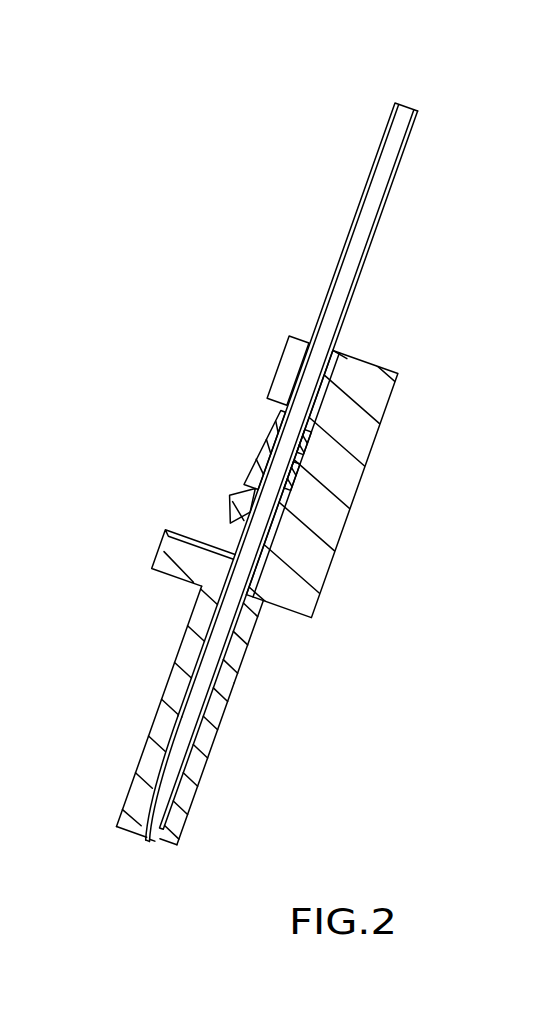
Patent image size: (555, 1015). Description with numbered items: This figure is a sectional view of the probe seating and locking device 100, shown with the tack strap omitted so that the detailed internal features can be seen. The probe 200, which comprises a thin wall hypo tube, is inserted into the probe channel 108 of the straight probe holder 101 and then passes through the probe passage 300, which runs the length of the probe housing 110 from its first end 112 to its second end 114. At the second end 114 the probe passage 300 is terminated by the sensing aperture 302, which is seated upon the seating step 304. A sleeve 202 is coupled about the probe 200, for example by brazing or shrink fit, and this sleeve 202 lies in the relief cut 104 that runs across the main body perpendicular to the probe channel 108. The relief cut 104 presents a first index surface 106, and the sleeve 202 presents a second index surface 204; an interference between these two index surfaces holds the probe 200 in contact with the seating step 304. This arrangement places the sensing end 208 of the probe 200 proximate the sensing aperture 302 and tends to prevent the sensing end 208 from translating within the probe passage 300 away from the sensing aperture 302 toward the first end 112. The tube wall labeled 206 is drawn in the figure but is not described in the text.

The probe seating and locking device 100 is at (155, 123).
The straight probe holder 101 is at (355, 352).
The relief cut 104 is at (300, 490).
The first index surface 106 is at (313, 420).
The probe channel 108 is at (247, 521).
The probe housing 110 is at (212, 728).
The first end 112 is at (250, 608).
The second end 114 is at (173, 833).
The probe 200 is at (345, 273).
The sleeve 202 is at (263, 462).
The second index surface 204 is at (310, 424).
The outer wall of elongate member 206 is at (378, 222).
The sensing end 208 is at (155, 800).
The probe passage 300 is at (213, 685).
The sensing aperture 302 is at (155, 835).
The seating step 304 is at (147, 823).